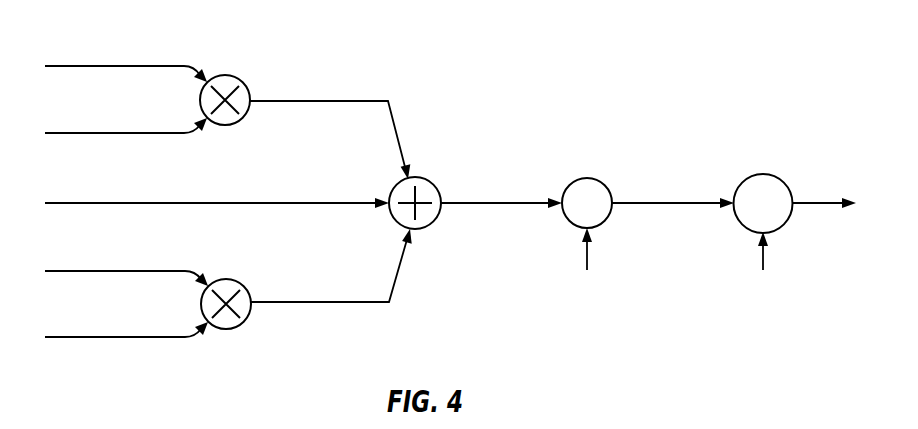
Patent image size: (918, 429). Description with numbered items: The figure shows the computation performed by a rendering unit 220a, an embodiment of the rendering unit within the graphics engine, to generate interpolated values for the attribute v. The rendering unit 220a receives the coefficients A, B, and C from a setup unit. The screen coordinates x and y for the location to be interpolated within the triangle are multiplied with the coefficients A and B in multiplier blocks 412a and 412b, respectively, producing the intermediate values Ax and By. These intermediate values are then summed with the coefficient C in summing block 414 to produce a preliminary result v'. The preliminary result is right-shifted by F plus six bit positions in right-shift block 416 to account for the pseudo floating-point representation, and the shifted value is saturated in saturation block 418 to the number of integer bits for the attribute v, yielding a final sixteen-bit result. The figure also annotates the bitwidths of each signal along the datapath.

The datapath 220a is at (790, 50).
The multiplier 412a is at (243, 119).
The multiplier 412b is at (238, 326).
The adder 414 is at (421, 178).
The shifter 416 is at (602, 162).
The saturation unit 418 is at (757, 175).